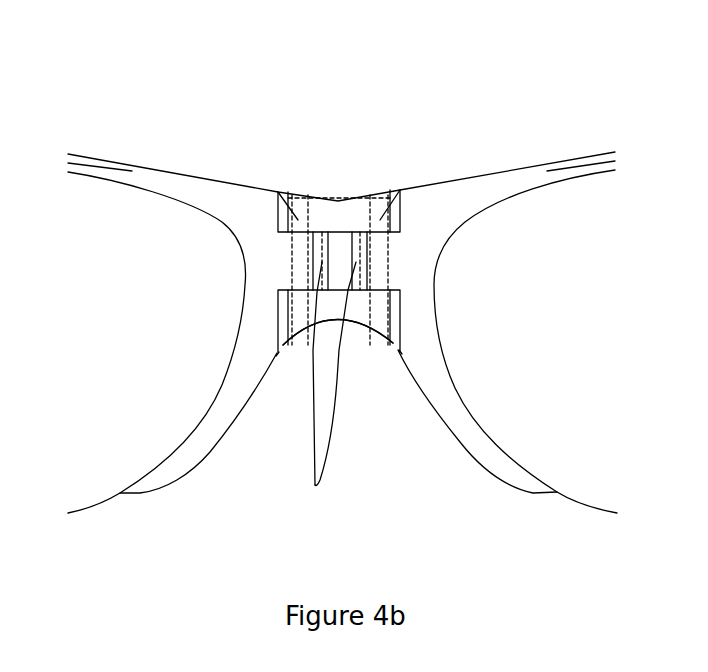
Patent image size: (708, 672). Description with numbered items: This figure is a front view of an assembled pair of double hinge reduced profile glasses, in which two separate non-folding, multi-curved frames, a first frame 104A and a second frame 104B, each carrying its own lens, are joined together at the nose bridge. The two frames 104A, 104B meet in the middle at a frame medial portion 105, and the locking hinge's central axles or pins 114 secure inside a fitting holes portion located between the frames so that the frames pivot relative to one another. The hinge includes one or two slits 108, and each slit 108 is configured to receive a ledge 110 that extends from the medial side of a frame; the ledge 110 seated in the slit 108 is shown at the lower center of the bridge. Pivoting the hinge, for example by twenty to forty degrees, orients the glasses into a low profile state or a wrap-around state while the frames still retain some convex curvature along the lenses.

The frame 104A is at (143, 175).
The frame 104B is at (535, 177).
The frame medial portion 105 is at (338, 222).
The central axle or pin 114 is at (298, 220).
The ledge 110 is at (322, 388).
The slit 108 is at (338, 332).